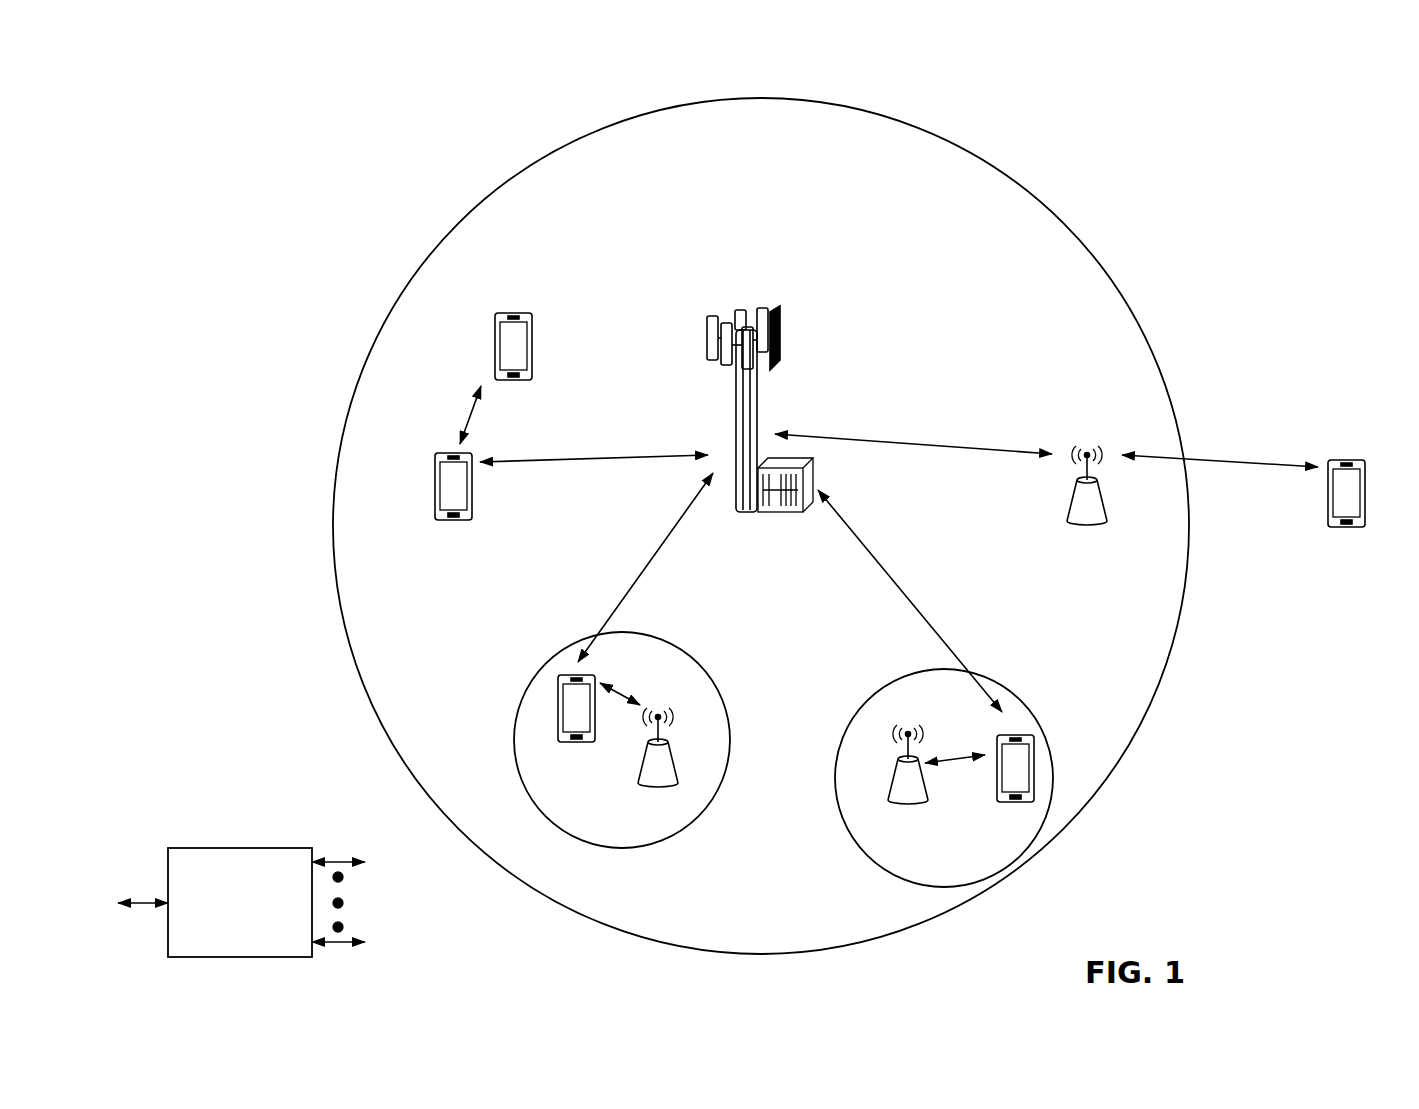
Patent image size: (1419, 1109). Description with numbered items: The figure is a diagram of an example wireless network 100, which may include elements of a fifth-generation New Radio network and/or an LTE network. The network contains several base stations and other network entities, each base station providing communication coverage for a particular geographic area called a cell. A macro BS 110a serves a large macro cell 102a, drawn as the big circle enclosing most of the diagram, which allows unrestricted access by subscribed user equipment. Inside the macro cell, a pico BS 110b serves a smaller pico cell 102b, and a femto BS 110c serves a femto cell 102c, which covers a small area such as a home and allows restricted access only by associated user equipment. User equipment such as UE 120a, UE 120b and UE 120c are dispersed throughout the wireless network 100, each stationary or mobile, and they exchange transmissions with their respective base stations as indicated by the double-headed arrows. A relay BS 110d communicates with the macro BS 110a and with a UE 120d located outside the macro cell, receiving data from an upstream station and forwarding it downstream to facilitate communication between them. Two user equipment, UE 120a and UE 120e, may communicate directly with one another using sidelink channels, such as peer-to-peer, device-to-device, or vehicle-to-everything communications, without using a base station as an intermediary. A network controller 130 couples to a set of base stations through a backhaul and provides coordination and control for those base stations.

The wireless network 100 is at (224, 92).
The macro cell 102a is at (1052, 207).
The pico cell 102b is at (719, 680).
The femto cell 102c is at (881, 688).
The macro BS 110a is at (752, 300).
The pico BS 110b is at (681, 772).
The femto BS 110c is at (893, 790).
The relay BS 110d is at (1087, 446).
The UE 120a is at (432, 474).
The UE 120b is at (569, 744).
The UE 120c is at (1000, 804).
The UE 120d is at (1354, 456).
The UE 120e is at (496, 333).
The network controller 130 is at (236, 846).